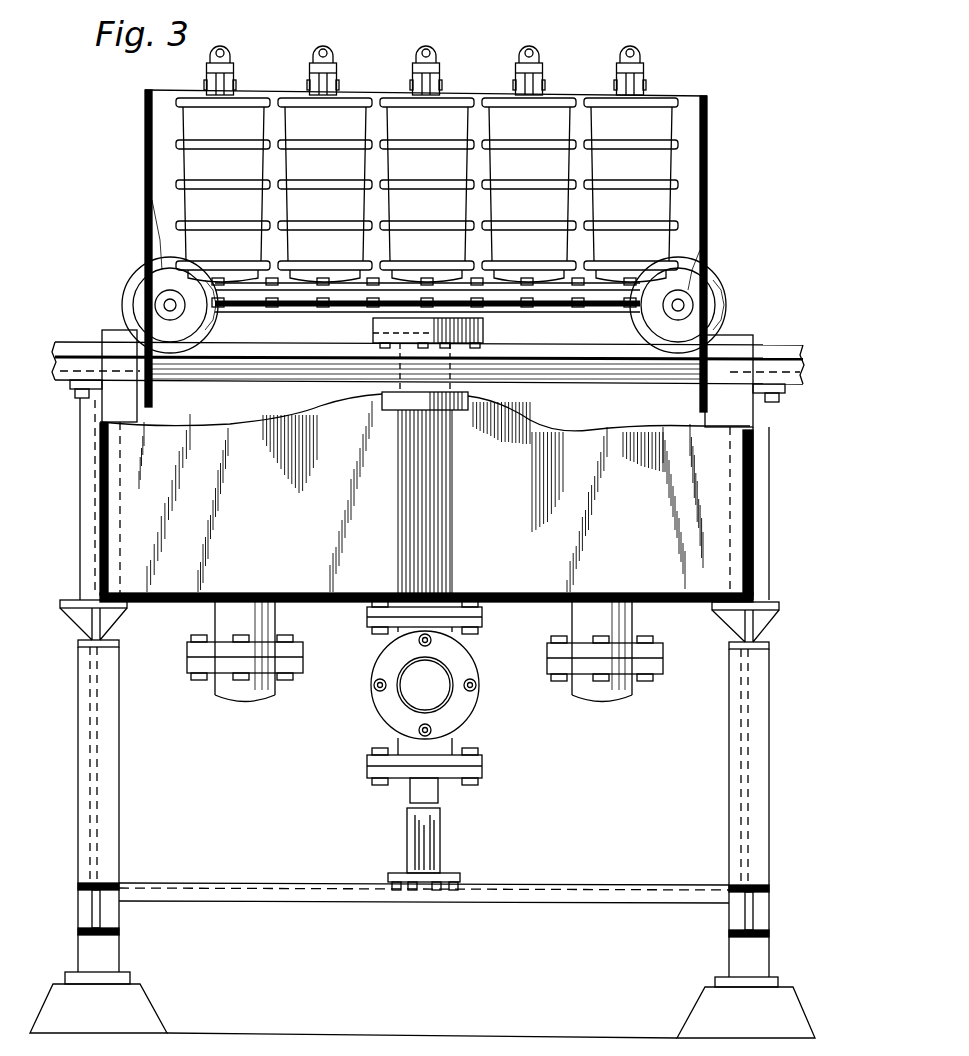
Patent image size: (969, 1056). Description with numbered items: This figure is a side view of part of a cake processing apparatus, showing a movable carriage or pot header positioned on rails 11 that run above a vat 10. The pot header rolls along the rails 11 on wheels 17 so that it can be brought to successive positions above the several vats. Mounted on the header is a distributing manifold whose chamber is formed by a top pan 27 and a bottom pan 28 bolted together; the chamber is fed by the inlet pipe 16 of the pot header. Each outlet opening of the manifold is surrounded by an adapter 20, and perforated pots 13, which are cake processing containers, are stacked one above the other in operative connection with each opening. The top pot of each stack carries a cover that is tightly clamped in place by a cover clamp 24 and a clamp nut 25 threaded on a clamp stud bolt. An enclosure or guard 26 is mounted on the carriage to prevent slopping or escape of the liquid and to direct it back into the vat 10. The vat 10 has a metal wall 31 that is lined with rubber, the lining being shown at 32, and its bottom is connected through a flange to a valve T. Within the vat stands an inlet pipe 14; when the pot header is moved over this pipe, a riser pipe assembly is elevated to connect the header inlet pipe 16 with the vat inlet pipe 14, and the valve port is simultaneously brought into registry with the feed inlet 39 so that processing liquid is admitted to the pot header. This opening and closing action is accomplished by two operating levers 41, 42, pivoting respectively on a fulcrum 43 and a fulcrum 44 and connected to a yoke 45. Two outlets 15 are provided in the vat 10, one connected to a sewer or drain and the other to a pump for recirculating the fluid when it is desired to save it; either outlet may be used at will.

The vat 10 is at (426, 498).
The rails 11 is at (68, 350).
The pots 13 is at (190, 123).
The inlet pipe in the vat 14 is at (453, 492).
The outlets 15 is at (246, 700).
The inlet pipe for the pot header 16 is at (456, 412).
The wheels 17 is at (140, 284).
The adapter 20 is at (238, 270).
The cover clamp 24 is at (306, 76).
The clamp nut 25 is at (317, 52).
The enclosure or guard 26 is at (145, 156).
The top pan 27 is at (300, 290).
The bottom pan 28 is at (242, 318).
The metal wall 31 is at (95, 512).
The rubber lining 32 is at (108, 448).
The feed inlet 39 is at (466, 703).
The operating lever 41 is at (440, 840).
The operating lever 42 is at (412, 842).
The fulcrum 43 is at (440, 857).
The fulcrum 44 is at (408, 856).
The yoke 45 is at (442, 818).